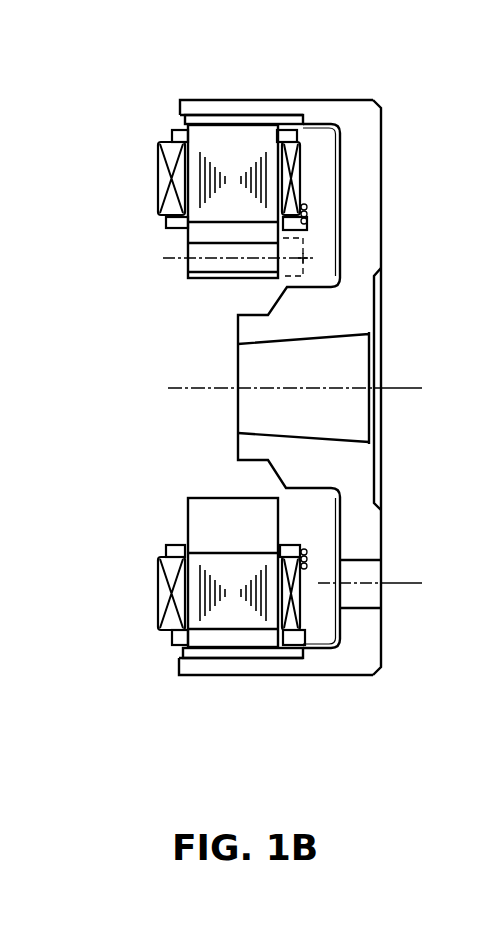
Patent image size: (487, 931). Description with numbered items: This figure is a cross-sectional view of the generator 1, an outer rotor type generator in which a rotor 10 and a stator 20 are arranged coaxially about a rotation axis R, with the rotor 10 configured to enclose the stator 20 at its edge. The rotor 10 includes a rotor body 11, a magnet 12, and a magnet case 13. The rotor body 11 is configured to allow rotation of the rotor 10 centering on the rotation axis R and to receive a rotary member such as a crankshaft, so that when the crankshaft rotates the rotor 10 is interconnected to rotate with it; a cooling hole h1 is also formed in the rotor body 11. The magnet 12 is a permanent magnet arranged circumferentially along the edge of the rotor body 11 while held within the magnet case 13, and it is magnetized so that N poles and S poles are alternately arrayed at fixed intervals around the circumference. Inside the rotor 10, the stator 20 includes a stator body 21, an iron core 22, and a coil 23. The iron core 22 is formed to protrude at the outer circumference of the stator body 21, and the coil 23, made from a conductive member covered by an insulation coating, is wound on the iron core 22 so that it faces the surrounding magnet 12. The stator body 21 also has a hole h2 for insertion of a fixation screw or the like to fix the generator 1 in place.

The generator 1 is at (304, 61).
The rotor 10 is at (446, 73).
The rotor body 11 is at (367, 183).
The magnet 12 is at (262, 116).
The magnet case 13 is at (332, 125).
The stator 20 is at (93, 115).
The stator body 21 is at (197, 237).
The iron core 22 is at (183, 210).
The coil 23 is at (160, 163).
The cooling hole h1 is at (381, 568).
The hole h2 is at (186, 262).
The rotation axis R is at (284, 391).